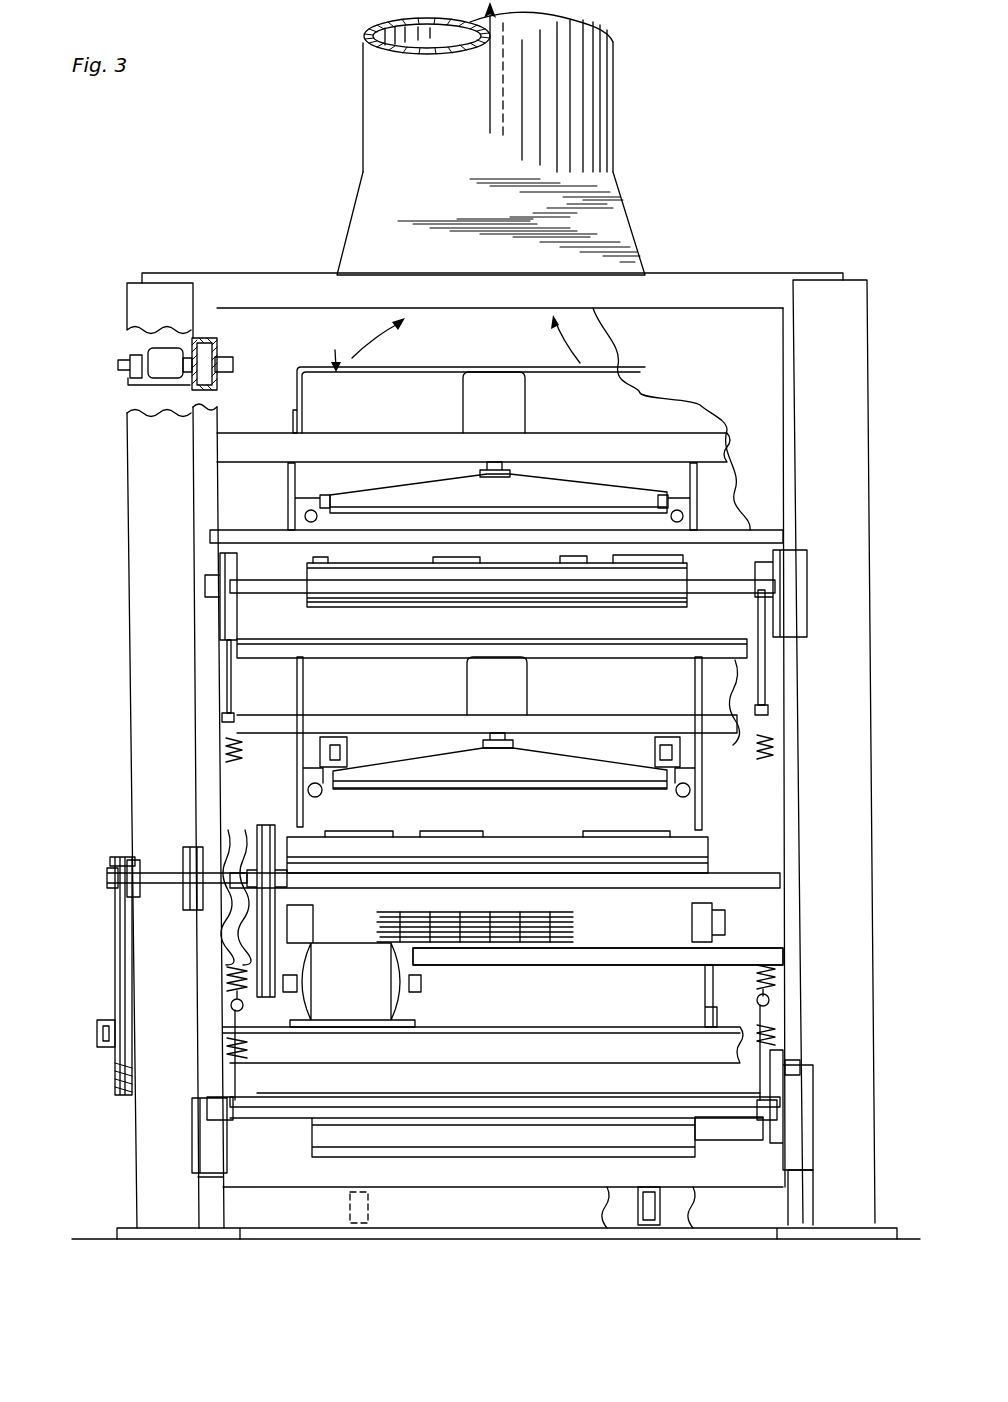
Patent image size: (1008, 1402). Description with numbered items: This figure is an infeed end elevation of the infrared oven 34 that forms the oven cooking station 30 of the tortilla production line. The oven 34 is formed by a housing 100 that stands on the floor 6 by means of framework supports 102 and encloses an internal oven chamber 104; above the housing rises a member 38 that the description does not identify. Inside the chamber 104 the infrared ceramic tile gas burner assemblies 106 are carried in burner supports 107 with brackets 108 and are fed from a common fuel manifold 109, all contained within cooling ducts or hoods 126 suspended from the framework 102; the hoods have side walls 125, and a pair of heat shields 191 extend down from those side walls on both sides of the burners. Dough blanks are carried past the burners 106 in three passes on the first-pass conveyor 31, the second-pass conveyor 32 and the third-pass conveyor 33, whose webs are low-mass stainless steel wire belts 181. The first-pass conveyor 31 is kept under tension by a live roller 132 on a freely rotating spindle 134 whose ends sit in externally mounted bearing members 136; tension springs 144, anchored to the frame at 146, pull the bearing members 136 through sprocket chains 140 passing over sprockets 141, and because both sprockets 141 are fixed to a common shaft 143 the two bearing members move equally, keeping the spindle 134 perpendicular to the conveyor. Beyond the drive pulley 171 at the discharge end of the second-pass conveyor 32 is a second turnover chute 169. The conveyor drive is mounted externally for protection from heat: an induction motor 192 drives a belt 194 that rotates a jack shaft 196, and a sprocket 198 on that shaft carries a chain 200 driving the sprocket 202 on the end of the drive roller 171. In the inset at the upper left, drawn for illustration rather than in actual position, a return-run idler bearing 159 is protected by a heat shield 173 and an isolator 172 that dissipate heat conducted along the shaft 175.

The exhaust duct 38 is at (612, 76).
The oven cooking station 30 is at (752, 192).
The housing 100 is at (728, 283).
The framework supports 102 is at (337, 435).
The heat shield 173 is at (217, 346).
The shaft 175 is at (236, 364).
The isolator 172 is at (150, 385).
The bearing 159 is at (135, 352).
The side walls 125 is at (297, 396).
The common manifold 109 is at (465, 413).
The burner cooling ducts 126 is at (451, 343).
The infrared ceramic tile gas burner assemblies 106 is at (498, 593).
The burner support 107 is at (425, 760).
The oven chamber 104 is at (582, 812).
The heat shields 191 is at (288, 513).
The brackets 108 is at (340, 745).
The bearing members 136 is at (218, 556).
The first pass conveyor 31 is at (672, 563).
The oven 34 is at (880, 653).
The sprockets 141 is at (229, 660).
The sprocket chains 140 is at (228, 703).
The tension springs 144 is at (230, 758).
The second-pass conveyor 32 is at (700, 890).
The belt 194 is at (258, 905).
The jack shaft 196 is at (160, 868).
The sprocket 198 is at (112, 868).
The chain 200 is at (115, 970).
The sprocket 202 is at (113, 1062).
The induction motor 192 is at (373, 974).
The wire belts 181 is at (562, 915).
The second turnover chute 169 is at (655, 999).
The drive pulley 171 is at (720, 1022).
The shaft 143 is at (530, 1108).
The frame anchor 146 is at (218, 1088).
The third pass conveyor 33 is at (505, 876).
The spindle 134 is at (578, 593).
The live roller 132 is at (640, 567).
The floor 6 is at (88, 1245).